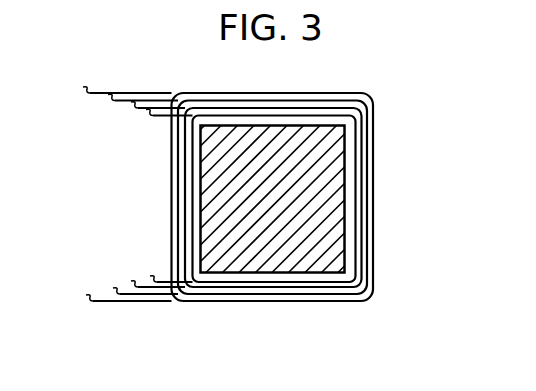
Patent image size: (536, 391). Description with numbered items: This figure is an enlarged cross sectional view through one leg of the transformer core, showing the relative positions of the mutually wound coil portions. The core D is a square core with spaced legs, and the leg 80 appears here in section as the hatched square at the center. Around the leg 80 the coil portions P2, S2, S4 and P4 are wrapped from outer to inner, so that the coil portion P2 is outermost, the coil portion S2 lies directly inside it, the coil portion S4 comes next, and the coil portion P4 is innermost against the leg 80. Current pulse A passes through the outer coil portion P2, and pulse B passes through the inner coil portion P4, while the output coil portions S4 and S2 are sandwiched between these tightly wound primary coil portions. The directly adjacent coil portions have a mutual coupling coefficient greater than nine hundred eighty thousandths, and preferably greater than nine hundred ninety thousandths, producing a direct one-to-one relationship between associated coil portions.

The coil portion P2 is at (113, 93).
The coil portion S2 is at (130, 104).
The coil portion S4 is at (146, 115).
The coil portion P4 is at (163, 122).
The leg 80 is at (263, 270).
The core D is at (349, 173).